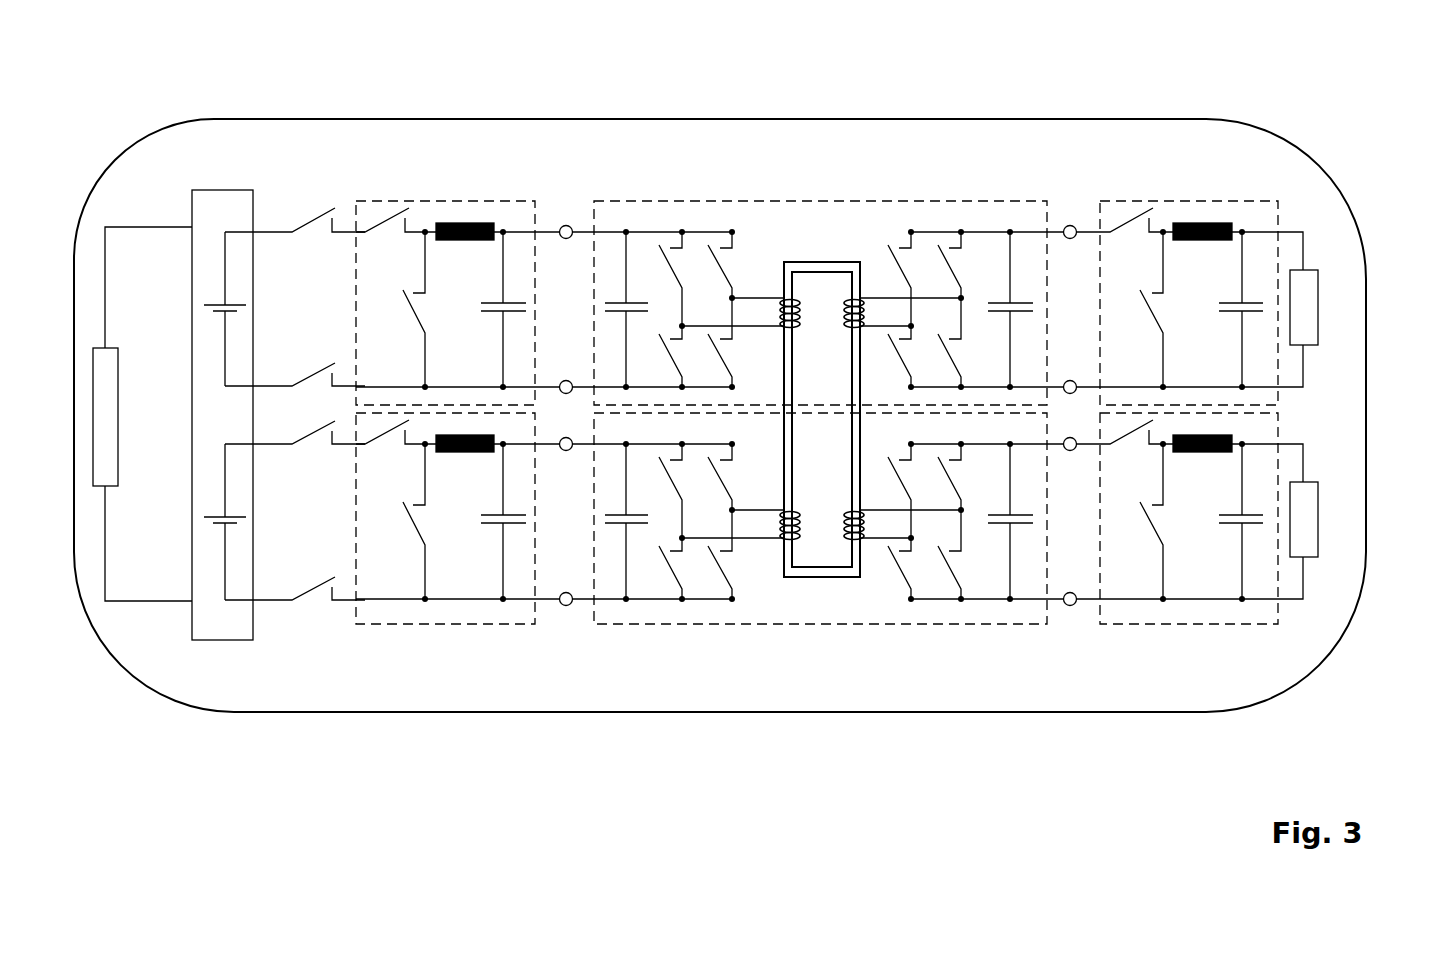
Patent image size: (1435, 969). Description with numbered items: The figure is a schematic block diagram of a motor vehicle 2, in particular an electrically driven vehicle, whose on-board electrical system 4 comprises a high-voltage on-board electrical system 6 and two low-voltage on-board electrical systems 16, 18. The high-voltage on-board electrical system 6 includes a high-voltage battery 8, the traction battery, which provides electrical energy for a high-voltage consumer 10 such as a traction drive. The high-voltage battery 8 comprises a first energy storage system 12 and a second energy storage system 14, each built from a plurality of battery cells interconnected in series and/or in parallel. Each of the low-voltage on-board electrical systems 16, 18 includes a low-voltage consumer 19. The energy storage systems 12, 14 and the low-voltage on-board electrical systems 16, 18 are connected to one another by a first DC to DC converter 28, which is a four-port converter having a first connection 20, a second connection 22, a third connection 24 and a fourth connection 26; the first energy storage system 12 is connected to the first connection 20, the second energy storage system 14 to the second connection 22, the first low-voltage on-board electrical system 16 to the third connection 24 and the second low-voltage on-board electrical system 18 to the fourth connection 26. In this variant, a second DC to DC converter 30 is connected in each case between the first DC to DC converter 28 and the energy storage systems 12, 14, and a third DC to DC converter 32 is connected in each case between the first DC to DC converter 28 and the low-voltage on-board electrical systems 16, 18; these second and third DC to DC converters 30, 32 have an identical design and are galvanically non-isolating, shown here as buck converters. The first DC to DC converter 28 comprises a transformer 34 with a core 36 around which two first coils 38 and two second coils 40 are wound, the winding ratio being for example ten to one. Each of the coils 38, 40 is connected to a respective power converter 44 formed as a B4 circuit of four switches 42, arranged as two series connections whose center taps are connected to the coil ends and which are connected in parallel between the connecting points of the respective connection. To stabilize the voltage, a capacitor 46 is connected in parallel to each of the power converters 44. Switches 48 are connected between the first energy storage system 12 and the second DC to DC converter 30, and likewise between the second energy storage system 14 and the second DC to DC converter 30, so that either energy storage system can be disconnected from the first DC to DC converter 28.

The motor vehicle 2 is at (927, 118).
The on-board electrical system 4 is at (630, 148).
The high-voltage on-board electrical system 6 is at (152, 170).
The high-voltage battery 8 is at (222, 190).
The high-voltage consumer 10 is at (120, 418).
The first energy storage system 12 is at (212, 290).
The second energy storage system 14 is at (212, 539).
The first low-voltage on-board electrical system 16 is at (1320, 250).
The second low-voltage on-board electrical system 18 is at (1320, 465).
The low-voltage consumer 19 is at (1308, 346).
The first connection 20 is at (563, 225).
The second connection 22 is at (566, 451).
The third connection 24 is at (1070, 225).
The fourth connection 26 is at (1070, 451).
The first DC to DC converter 28 is at (912, 626).
The second DC to DC converter 30 is at (452, 201).
The third DC to DC converter 32 is at (1190, 201).
The transformer 34 is at (812, 212).
The core 36 is at (820, 262).
The first coils 38 is at (782, 306).
The second coils 40 is at (865, 312).
The switches 42 is at (665, 255).
The power converter 44 is at (688, 212).
The capacitor 46 is at (622, 300).
The switches 48 is at (314, 216).